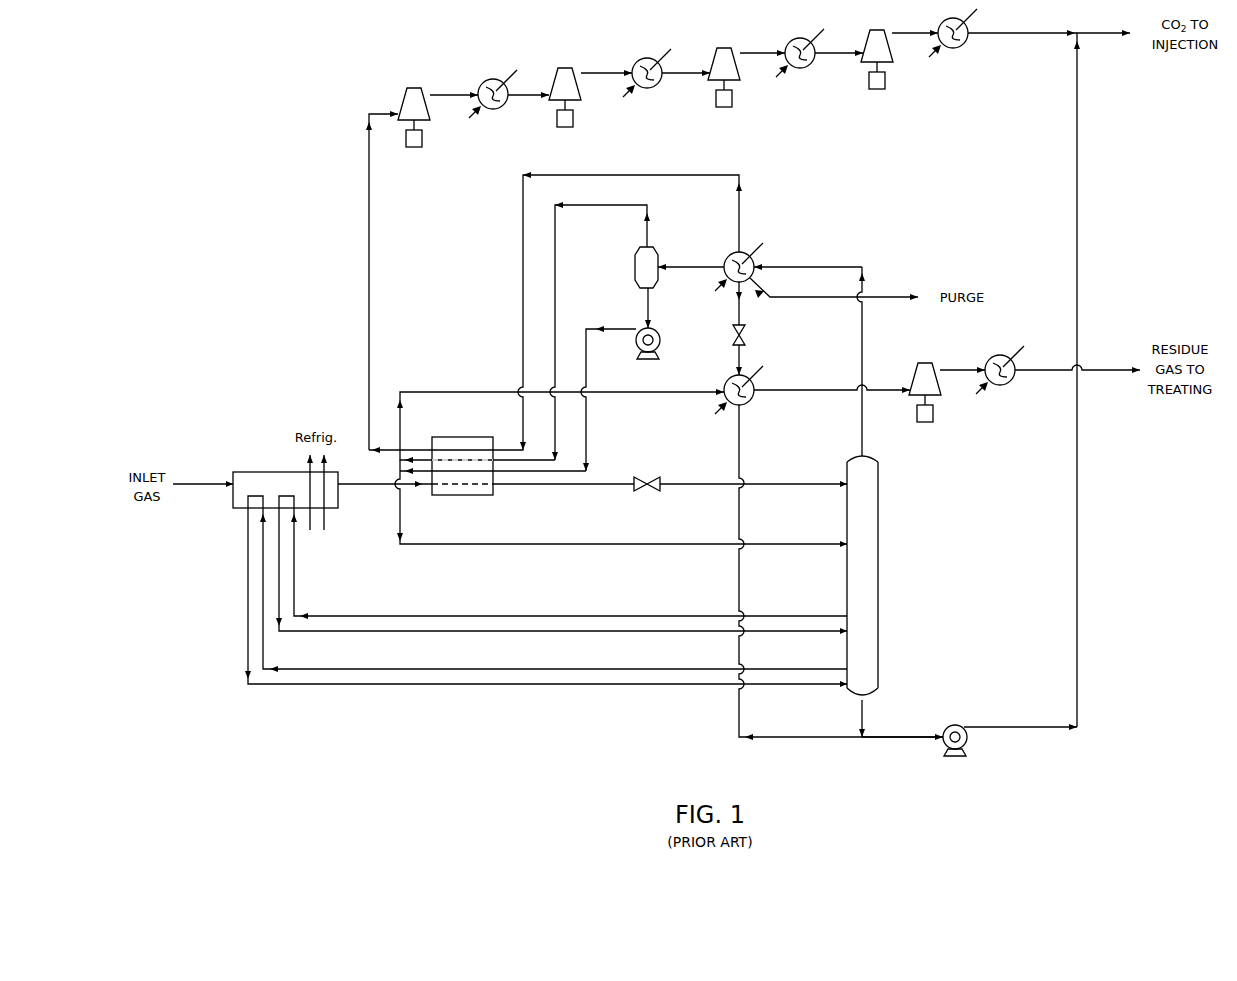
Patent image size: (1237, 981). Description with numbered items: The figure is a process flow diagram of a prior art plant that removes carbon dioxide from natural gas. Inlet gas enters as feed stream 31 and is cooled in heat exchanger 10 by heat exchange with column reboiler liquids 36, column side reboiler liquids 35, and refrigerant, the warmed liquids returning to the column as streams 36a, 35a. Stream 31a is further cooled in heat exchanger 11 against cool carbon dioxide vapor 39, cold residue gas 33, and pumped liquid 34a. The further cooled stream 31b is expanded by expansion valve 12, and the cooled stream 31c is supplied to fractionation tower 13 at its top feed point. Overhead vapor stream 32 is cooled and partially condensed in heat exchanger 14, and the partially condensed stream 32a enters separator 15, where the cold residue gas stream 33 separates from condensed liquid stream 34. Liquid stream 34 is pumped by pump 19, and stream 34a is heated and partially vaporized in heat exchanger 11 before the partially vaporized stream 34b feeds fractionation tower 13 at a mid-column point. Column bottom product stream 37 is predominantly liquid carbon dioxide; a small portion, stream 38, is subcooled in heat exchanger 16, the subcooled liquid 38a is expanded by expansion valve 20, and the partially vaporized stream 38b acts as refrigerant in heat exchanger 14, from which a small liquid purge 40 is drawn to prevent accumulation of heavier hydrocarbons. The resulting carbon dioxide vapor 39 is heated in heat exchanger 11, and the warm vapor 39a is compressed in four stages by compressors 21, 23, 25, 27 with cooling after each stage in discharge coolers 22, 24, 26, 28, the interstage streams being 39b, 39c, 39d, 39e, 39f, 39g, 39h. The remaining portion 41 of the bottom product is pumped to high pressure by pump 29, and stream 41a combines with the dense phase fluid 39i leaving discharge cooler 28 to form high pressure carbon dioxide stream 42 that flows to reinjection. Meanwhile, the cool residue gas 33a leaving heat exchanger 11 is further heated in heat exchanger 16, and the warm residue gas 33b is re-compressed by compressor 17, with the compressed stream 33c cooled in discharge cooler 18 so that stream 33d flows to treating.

The heat exchanger 10 is at (257, 471).
The heat exchanger 11 is at (461, 497).
The expansion valve 12 is at (647, 492).
The fractionation tower 13 is at (880, 630).
The heat exchanger 14 is at (752, 258).
The separator 15 is at (633, 268).
The heat exchanger 16 is at (726, 402).
The compressor 17 is at (925, 362).
The discharge cooler 18 is at (1000, 386).
The pump 19 is at (662, 338).
The expansion valve 20 is at (747, 340).
The compressor 21 is at (412, 86).
The discharge cooler 22 is at (493, 110).
The compressor 23 is at (570, 66).
The discharge cooler 24 is at (647, 90).
The compressor 25 is at (724, 46).
The discharge cooler 26 is at (800, 70).
The compressor 27 is at (877, 28).
The discharge cooler 28 is at (953, 50).
The pump 29 is at (955, 723).
The feed stream 31 is at (198, 486).
The cooled feed stream 31a is at (360, 486).
The further cooled feed stream 31b is at (572, 486).
The expanded feed stream 31c is at (802, 486).
The overhead vapor stream 32 is at (860, 348).
The partially condensed stream 32a is at (700, 265).
The cold residue gas stream 33 is at (614, 207).
The cool residue gas stream 33a is at (460, 394).
The warm residue gas stream 33b is at (800, 392).
The compressed residue gas stream 33c is at (962, 368).
The residue gas to treating 33d is at (1100, 372).
The condensed liquid stream 34 is at (645, 312).
The pumped liquid stream 34a is at (610, 333).
The partially vaporized stream 34b is at (802, 546).
The column side reboiler liquids 35 is at (572, 614).
The heated side reboiler liquids 35a is at (570, 633).
The column reboiler liquids 36 is at (464, 667).
The heated reboiler liquids 36a is at (464, 686).
The column bottom product stream 37 is at (866, 710).
The liquid carbon dioxide stream 38 is at (802, 739).
The subcooled liquid stream 38a is at (735, 368).
The expanded refrigerant stream 38b is at (735, 315).
The cool carbon dioxide vapor stream 39 is at (700, 177).
The warm carbon dioxide vapor stream 39a is at (371, 270).
The first stage compressed carbon dioxide 39b is at (450, 93).
The first stage cooled carbon dioxide 39c is at (524, 97).
The second stage compressed carbon dioxide 39d is at (605, 71).
The second stage cooled carbon dioxide 39e is at (682, 76).
The third stage compressed carbon dioxide 39f is at (760, 51).
The third stage cooled carbon dioxide 39g is at (832, 56).
The fourth stage compressed carbon dioxide 39h is at (910, 31).
The dense phase fluid stream 39i is at (1013, 36).
The liquid purge stream 40 is at (795, 300).
The remaining portion of bottom product 41 is at (900, 739).
The pumped liquid carbon dioxide stream 41a is at (1013, 729).
The high pressure carbon dioxide stream 42 is at (1100, 36).